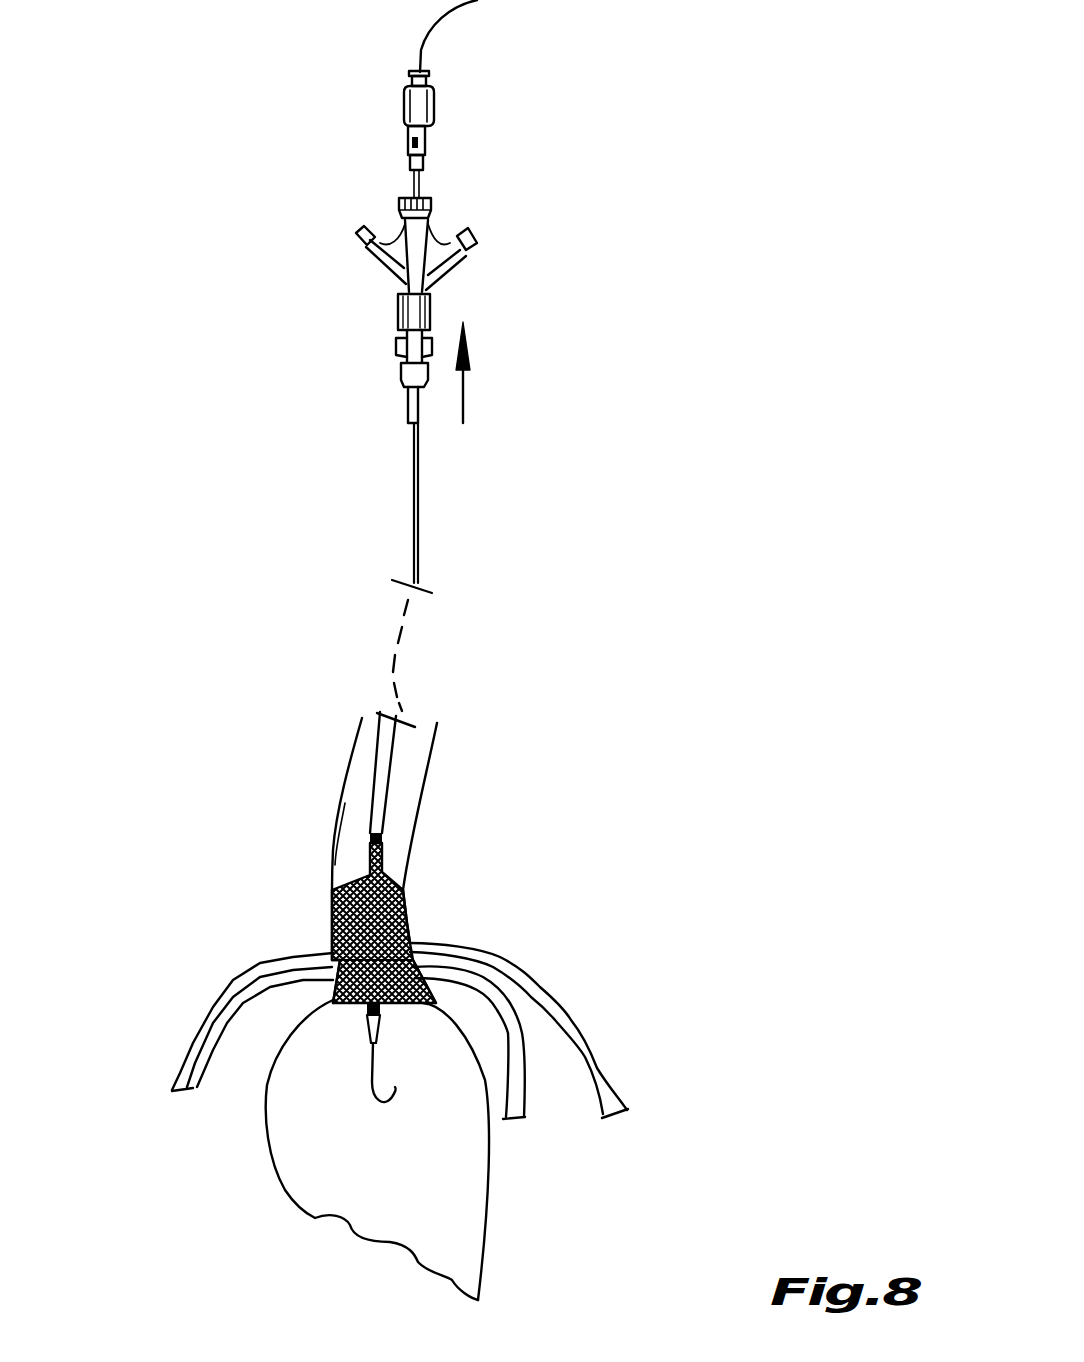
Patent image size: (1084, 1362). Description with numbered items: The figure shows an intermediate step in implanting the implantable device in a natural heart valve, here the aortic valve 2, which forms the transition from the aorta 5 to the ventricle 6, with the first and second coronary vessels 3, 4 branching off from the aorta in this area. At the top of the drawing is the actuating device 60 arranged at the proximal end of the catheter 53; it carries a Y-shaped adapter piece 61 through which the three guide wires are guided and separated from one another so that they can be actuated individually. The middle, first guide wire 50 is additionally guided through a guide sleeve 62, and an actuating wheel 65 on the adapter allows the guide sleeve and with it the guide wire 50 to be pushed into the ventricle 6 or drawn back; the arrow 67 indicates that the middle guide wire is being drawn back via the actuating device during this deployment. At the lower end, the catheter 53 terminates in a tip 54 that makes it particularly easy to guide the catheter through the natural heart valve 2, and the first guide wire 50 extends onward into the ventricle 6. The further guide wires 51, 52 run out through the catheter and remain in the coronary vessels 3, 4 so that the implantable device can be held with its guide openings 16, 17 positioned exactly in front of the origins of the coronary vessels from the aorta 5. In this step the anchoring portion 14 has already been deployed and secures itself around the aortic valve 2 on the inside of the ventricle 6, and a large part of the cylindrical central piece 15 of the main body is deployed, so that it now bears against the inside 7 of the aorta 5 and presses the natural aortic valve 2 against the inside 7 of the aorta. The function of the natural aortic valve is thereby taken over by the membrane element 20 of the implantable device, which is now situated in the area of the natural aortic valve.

The aortic valve 2 is at (250, 1005).
The first coronary vessel 3 is at (220, 994).
The second coronary vessel 4 is at (590, 1033).
The aorta 5 is at (345, 803).
The ventricle 6 is at (452, 1153).
The inside of the aorta 7 is at (336, 839).
The anchoring portion 14 is at (414, 1003).
The cylindrical central piece 15 is at (333, 917).
The guide opening 16 is at (333, 950).
The guide opening 17 is at (413, 947).
The membrane element 20 is at (407, 918).
The first guide wire 50 is at (580, 0).
The guide wire 51 is at (358, 234).
The guide wire 52 is at (473, 233).
The catheter 53 is at (380, 750).
The tip 54 is at (393, 1017).
The actuating device 60 is at (630, 153).
The Y-shaped adapter piece 61 is at (448, 270).
The guide sleeve 62 is at (408, 478).
The actuating wheel 65 is at (397, 210).
The arrow 67 is at (463, 395).